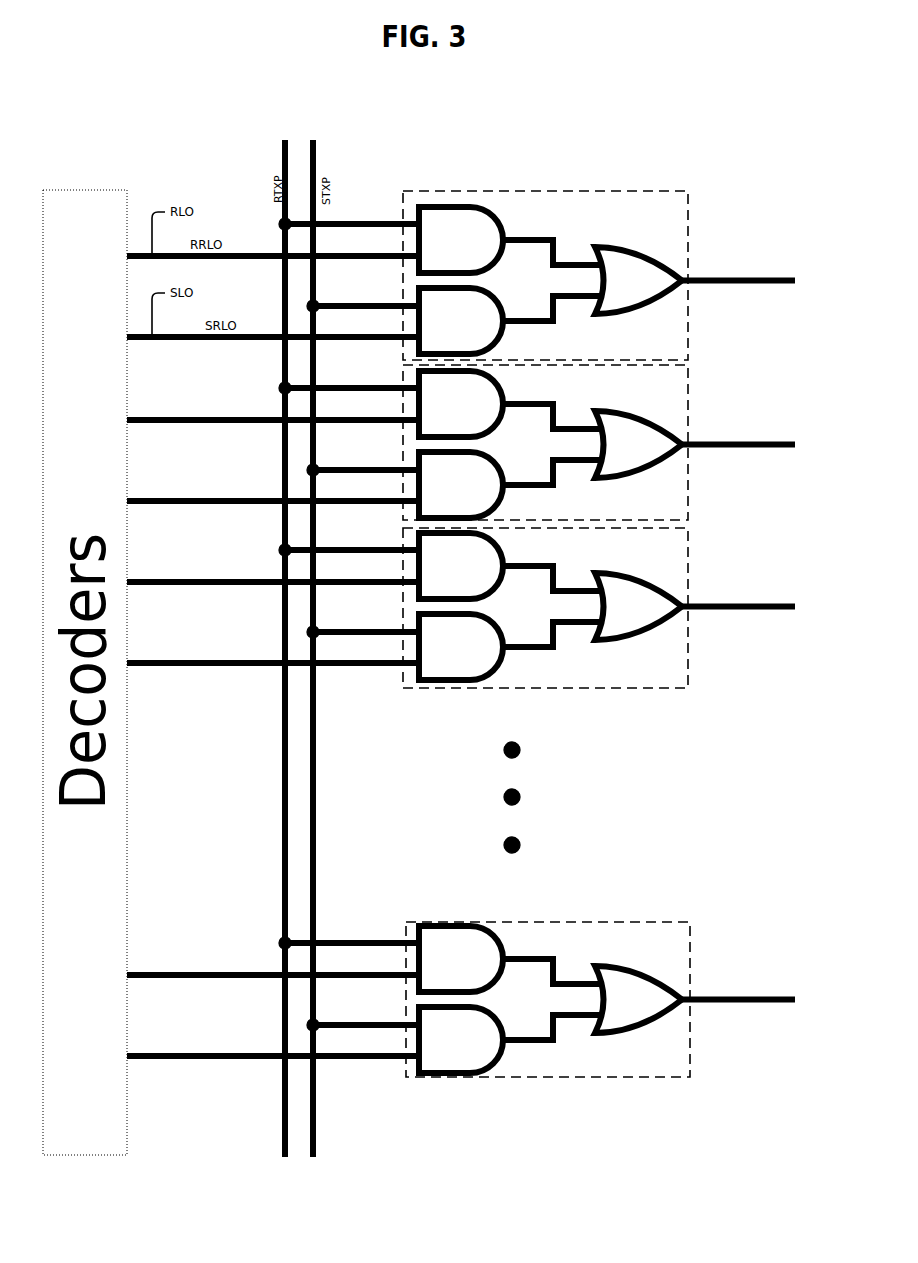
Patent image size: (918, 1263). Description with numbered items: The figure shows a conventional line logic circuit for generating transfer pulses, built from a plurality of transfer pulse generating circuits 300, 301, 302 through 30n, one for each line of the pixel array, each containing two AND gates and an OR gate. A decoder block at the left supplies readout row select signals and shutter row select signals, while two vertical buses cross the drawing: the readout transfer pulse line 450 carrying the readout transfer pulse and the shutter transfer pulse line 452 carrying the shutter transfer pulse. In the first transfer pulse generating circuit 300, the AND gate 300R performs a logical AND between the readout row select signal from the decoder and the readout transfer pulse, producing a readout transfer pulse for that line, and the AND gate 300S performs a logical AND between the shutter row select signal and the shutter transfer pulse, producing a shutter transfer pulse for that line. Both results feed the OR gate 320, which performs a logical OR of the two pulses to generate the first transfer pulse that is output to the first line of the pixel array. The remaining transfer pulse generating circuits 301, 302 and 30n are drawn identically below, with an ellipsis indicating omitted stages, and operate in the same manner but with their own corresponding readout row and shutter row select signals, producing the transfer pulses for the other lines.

The first transfer pulse generating circuit 300 is at (466, 257).
The AND gate 300R is at (461, 240).
The AND gate 300S is at (461, 321).
The OR gate 320 is at (638, 280).
The transfer pulse generating circuit 301 is at (687, 420).
The transfer pulse generating circuit 302 is at (687, 583).
The transfer pulse generating circuit 30n is at (690, 977).
The readout transfer pulse line 450 is at (285, 162).
The shutter transfer pulse line 452 is at (315, 173).